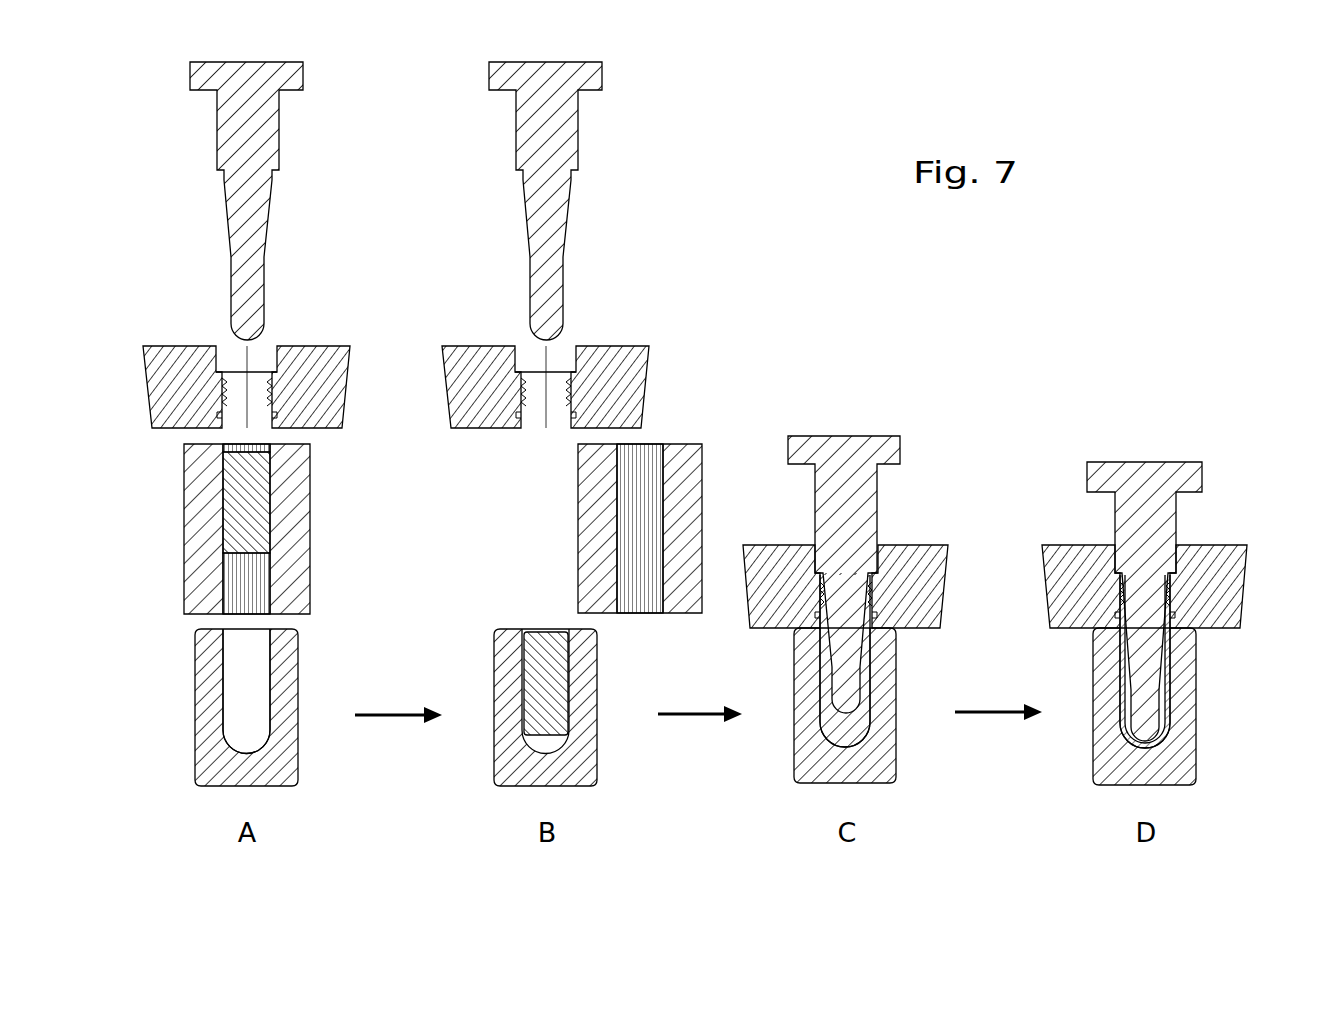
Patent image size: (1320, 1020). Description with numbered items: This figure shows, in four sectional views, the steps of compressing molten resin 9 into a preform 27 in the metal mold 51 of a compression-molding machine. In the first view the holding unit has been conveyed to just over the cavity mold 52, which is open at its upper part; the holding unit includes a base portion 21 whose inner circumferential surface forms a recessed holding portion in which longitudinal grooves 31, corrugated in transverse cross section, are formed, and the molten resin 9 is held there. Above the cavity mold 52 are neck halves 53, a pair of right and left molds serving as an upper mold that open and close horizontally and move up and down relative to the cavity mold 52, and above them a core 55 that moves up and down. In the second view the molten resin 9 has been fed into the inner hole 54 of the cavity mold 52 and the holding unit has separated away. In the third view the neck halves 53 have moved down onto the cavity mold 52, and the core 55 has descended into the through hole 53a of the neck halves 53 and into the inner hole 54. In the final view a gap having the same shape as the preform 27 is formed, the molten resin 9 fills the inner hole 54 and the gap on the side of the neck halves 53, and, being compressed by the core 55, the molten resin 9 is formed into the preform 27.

The metal mold 51 is at (185, 205).
The core 55 is at (268, 123).
The neck halves 53 is at (338, 383).
The through hole 53a is at (220, 370).
The cavity mold 52 is at (290, 754).
The inner hole 54 is at (258, 676).
The base portion 21 is at (303, 537).
The molten resin 9 is at (262, 482).
The longitudinal grooves 31 is at (258, 592).
The preform 27 is at (1165, 688).